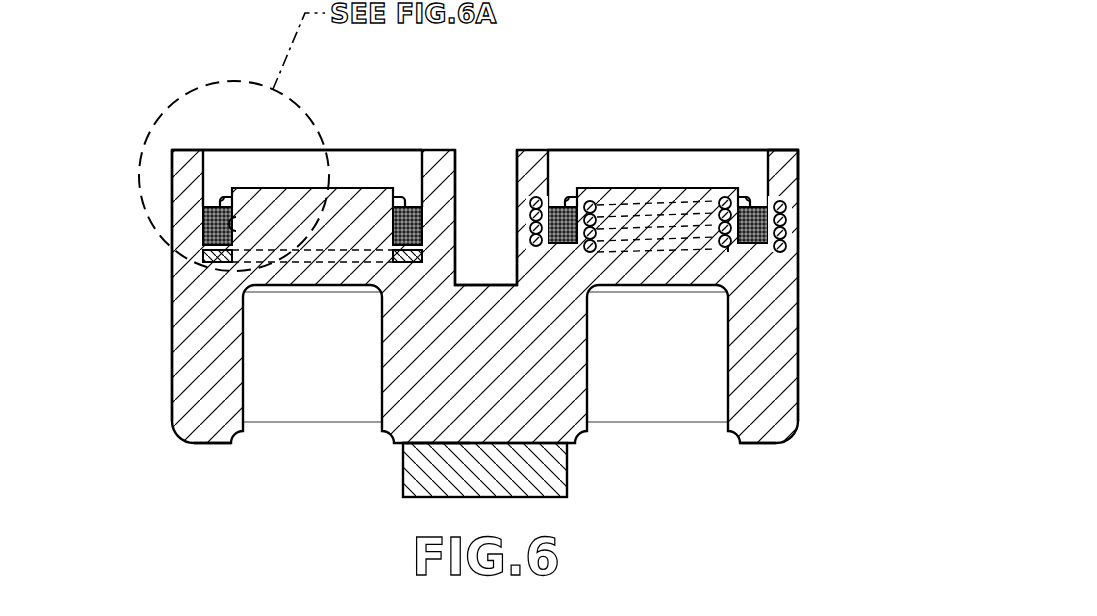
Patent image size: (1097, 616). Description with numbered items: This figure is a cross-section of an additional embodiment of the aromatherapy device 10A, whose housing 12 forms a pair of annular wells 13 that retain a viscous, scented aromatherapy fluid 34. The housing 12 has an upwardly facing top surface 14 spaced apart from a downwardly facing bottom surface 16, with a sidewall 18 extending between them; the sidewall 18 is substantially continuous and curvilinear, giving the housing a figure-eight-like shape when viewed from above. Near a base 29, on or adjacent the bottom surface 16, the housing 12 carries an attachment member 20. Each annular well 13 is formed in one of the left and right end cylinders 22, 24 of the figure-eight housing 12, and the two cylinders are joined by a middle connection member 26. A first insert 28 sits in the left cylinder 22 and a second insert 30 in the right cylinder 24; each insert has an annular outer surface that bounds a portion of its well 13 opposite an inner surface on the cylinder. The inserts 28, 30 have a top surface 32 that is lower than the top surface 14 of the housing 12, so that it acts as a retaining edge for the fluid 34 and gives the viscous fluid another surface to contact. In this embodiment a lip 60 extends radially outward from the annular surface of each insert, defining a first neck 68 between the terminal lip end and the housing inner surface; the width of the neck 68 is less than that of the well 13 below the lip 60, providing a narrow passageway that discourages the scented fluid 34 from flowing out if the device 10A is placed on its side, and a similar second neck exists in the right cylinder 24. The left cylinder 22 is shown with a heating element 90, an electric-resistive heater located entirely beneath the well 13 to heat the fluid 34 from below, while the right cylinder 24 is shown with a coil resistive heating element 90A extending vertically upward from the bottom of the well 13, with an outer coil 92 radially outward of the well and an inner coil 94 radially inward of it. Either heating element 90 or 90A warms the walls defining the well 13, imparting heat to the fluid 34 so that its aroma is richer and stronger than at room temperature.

The aromatherapy device 10A is at (775, 58).
The housing 12 is at (160, 316).
The annular well 13 is at (236, 224).
The top surface 14 is at (190, 148).
The bottom surface 16 is at (207, 447).
The sidewall 18 is at (172, 350).
The attachment member 20 is at (560, 475).
The left end cylinder 22 is at (236, 128).
The right end cylinder 24 is at (722, 130).
The middle connection member 26 is at (488, 290).
The first insert 28 is at (362, 172).
The base 29 is at (458, 454).
The second insert 30 is at (637, 172).
The top surface 32 is at (485, 169).
The aromatherapy fluid 34 is at (204, 221).
The lip 60 is at (223, 190).
The first neck 68 is at (210, 202).
The heating element 90 is at (232, 262).
The coil resistive heating element 90A is at (803, 241).
The outer coil 92 is at (741, 227).
The inner coil 94 is at (728, 247).